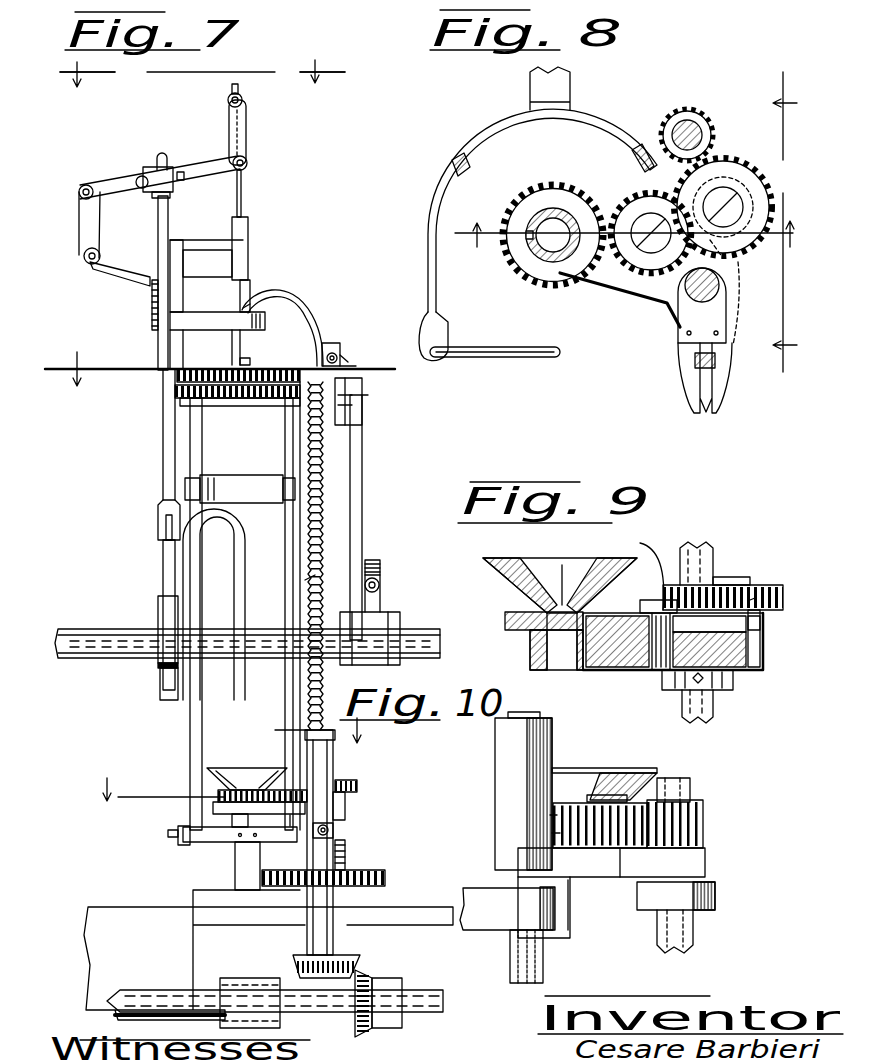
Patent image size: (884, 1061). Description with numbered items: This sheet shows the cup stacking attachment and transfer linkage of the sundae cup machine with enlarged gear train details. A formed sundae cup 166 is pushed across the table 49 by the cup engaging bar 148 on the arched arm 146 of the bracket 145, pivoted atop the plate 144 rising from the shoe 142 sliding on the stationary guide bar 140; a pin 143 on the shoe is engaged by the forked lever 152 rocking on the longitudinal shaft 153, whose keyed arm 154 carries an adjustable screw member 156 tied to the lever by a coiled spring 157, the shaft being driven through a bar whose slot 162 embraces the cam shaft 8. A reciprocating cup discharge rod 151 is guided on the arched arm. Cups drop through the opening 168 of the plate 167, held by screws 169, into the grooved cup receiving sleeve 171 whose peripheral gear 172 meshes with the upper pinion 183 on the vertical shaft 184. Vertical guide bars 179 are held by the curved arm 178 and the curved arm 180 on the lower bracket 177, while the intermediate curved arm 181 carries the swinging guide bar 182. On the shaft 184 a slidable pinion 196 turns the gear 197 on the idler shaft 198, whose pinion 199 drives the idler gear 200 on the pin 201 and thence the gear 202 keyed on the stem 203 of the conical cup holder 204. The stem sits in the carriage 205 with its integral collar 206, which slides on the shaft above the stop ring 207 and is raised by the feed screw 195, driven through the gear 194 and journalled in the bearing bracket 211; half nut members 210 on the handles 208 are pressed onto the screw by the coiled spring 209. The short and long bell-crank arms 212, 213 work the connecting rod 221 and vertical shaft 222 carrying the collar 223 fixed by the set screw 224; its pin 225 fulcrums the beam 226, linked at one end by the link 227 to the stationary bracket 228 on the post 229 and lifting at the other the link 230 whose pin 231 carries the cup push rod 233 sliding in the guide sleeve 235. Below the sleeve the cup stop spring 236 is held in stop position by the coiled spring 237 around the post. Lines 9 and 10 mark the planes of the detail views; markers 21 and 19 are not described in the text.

In FIG. 7, the section line 21 is at (205, 74).
In FIG. 7, the pin 231 is at (228, 100).
In FIG. 7, the upwardly directed link 230 is at (247, 148).
In FIG. 7, the beam 226 is at (106, 186).
In FIG. 7, the pin 225 is at (142, 176).
In FIG. 7, the set screw 224 is at (181, 172).
In FIG. 7, the collar 223 is at (165, 186).
In FIG. 7, the cup push rod 233 is at (242, 206).
In FIG. 7, the guide sleeve 235 is at (249, 244).
In FIG. 7, the link 227 is at (80, 234).
In FIG. 7, the stationary bracket 228 is at (132, 268).
In FIG. 7, the coiled spring 237 is at (152, 297).
In FIG. 7, the vertical standard or post 229 is at (158, 350).
In FIG. 7, the cup stop spring 236 is at (222, 325).
In FIG. 7, the cup engaging bar 148 is at (250, 362).
In FIG. 7, the cup discharge rod 151 is at (248, 300).
In FIG. 7, the arched arm 146 is at (316, 298).
In FIG. 7, the bracket 145 is at (336, 343).
In FIG. 7, the plate 144 is at (348, 357).
In FIG. 7, the guide bar 140 is at (357, 366).
In FIG. 7, the table 49 is at (56, 353).
In FIG. 7, the section line 19 is at (233, 380).
In FIG. 7, the plate 167 is at (178, 378).
In FIG. 7, the external peripheral gear 172 is at (178, 392).
In FIG. 7, the cup receiving sleeve 171 is at (192, 400).
In FIG. 7, the upper pinion 183 is at (290, 400).
In FIG. 7, the cup guide rods 179 is at (285, 452).
In FIG. 8, the cup guide rods 179 is at (462, 168).
In FIG. 7, the curved arm 178 is at (240, 489).
In FIG. 7, the vertical rod or shaft 222 is at (163, 491).
In FIG. 7, the connecting rod or toggle 221 is at (171, 615).
In FIG. 7, the longitudinal slot 162 is at (244, 594).
In FIG. 7, the vertical shaft 184 is at (308, 556).
In FIG. 8, the vertical shaft 184 is at (703, 138).
In FIG. 9, the vertical shaft 184 is at (713, 552).
In FIG. 10, the vertical shaft 184 is at (688, 792).
In FIG. 7, the vertical feed screw 195 is at (312, 584).
In FIG. 8, the vertical feed screw 195 is at (678, 308).
In FIG. 10, the vertical feed screw 195 is at (523, 752).
In FIG. 7, the intermediate curved arm 181 is at (236, 680).
In FIG. 7, the coiled spring 157 is at (381, 570).
In FIG. 7, the adjustable screw member 156 is at (380, 587).
In FIG. 7, the arm or plate 154 is at (377, 628).
In FIG. 7, the lever 152 is at (363, 457).
In FIG. 7, the block or shoe 142 is at (352, 420).
In FIG. 7, the pin 143 is at (368, 397).
In FIG. 7, the longitudinal shaft 153 is at (80, 632).
In FIG. 7, the short bell-crank arm 212 is at (158, 612).
In FIG. 7, the long bell-crank arm 213 is at (160, 682).
In FIG. 7, the cam shaft 8 is at (227, 760).
In FIG. 7, the vertical collar or sleeve 206 is at (333, 764).
In FIG. 8, the vertical collar or sleeve 206 is at (728, 308).
In FIG. 10, the vertical collar or sleeve 206 is at (496, 791).
In FIG. 7, the gear 197 is at (358, 787).
In FIG. 8, the gear 197 is at (760, 158).
In FIG. 9, the gear 197 is at (755, 600).
In FIG. 7, the pinion 199 is at (346, 805).
In FIG. 8, the pinion 199 is at (747, 292).
In FIG. 9, the pinion 199 is at (753, 617).
In FIG. 10, the pinion 199 is at (570, 890).
In FIG. 7, the handles 208 is at (334, 829).
In FIG. 8, the handles 208 is at (706, 413).
In FIG. 10, the handles 208 is at (480, 918).
In FIG. 7, the threaded half nut members 210 is at (336, 838).
In FIG. 10, the threaded half nut members 210 is at (537, 917).
In FIG. 7, the coiled spring 209 is at (352, 860).
In FIG. 8, the coiled spring 209 is at (697, 373).
In FIG. 7, the gear 194 is at (386, 878).
In FIG. 7, the intermediate idler gear 200 is at (291, 826).
In FIG. 8, the intermediate idler gear 200 is at (661, 265).
In FIG. 9, the intermediate idler gear 200 is at (620, 613).
In FIG. 10, the intermediate idler gear 200 is at (552, 833).
In FIG. 7, the conical cup holder 204 is at (262, 778).
In FIG. 9, the conical cup holder 204 is at (587, 550).
In FIG. 10, the conical cup holder 204 is at (600, 760).
In FIG. 7, the gear 202 is at (218, 796).
In FIG. 8, the gear 202 is at (540, 237).
In FIG. 9, the gear 202 is at (510, 622).
In FIG. 7, the carriage 205 is at (262, 816).
In FIG. 8, the carriage 205 is at (627, 260).
In FIG. 9, the carriage 205 is at (747, 652).
In FIG. 10, the carriage 205 is at (687, 867).
In FIG. 7, the curved arm 180 is at (205, 832).
In FIG. 8, the curved arm 180 is at (482, 139).
In FIG. 7, the lower bracket 177 is at (235, 874).
In FIG. 8, the lower bracket 177 is at (553, 84).
In FIG. 10, the lower bracket 177 is at (550, 815).
In FIG. 7, the bearing bracket 211 is at (346, 912).
In FIG. 7, the sundae cup 166 is at (158, 976).
In FIG. 7, the screws 169 is at (244, 982).
In FIG. 7, the circular opening 168 is at (358, 967).
In FIG. 8, the swinging cup guide bar 182 is at (518, 357).
In FIG. 8, the stem or shank 203 is at (550, 203).
In FIG. 9, the stem or shank 203 is at (540, 650).
In FIG. 8, the vertical pin 201 is at (644, 226).
In FIG. 9, the vertical pin 201 is at (636, 571).
In FIG. 8, the pinion 196 is at (714, 119).
In FIG. 9, the pinion 196 is at (712, 565).
In FIG. 10, the pinion 196 is at (653, 757).
In FIG. 8, the idler pin or stub shaft 198 is at (752, 241).
In FIG. 9, the idler pin or stub shaft 198 is at (720, 577).
In FIG. 8, the stop ring 207 is at (703, 315).
In FIG. 9, the stop ring 207 is at (730, 683).
In FIG. 10, the stop ring 207 is at (715, 895).
In FIG. 8, the section line 9— 9 is at (627, 222).
In FIG. 8, the section line 10— 10 is at (799, 222).